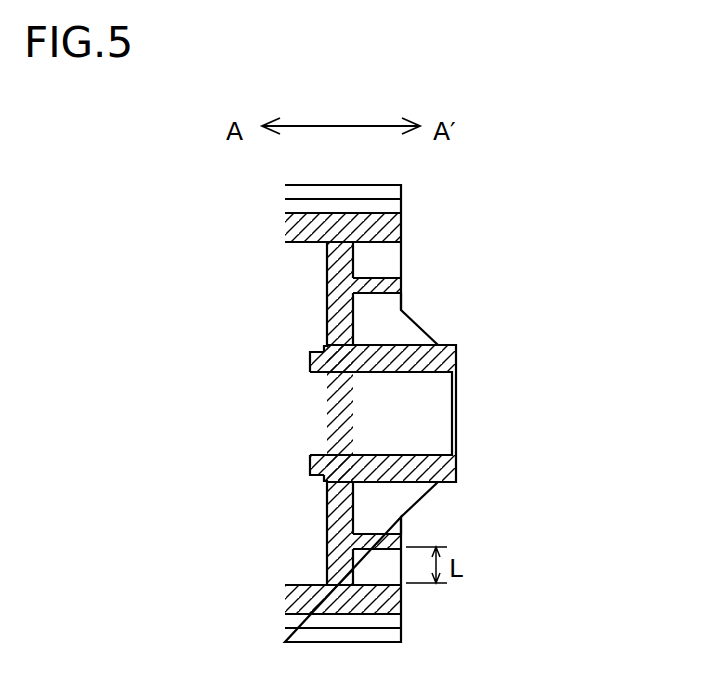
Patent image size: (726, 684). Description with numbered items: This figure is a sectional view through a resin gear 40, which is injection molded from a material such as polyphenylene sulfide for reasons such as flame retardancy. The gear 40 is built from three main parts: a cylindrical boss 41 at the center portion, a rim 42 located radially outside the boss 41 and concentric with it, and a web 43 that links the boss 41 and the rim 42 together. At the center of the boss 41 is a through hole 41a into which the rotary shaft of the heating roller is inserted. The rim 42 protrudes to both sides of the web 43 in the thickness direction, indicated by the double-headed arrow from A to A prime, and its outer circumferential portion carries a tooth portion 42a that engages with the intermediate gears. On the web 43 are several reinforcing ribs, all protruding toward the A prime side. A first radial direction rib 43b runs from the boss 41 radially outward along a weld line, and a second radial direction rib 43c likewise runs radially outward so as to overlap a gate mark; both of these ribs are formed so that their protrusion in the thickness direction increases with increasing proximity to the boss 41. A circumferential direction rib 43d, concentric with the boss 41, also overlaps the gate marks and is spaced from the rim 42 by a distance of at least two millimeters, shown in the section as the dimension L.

The gear 40 is at (621, 163).
The cylindrical boss 41 is at (433, 357).
The through hole 41a is at (413, 411).
The rim 42 is at (387, 223).
The tooth portion 42a is at (300, 190).
The web 43 is at (337, 321).
The first radial direction rib 43b is at (395, 500).
The second radial direction rib 43c is at (383, 312).
The circumferential direction rib 43d is at (401, 286).